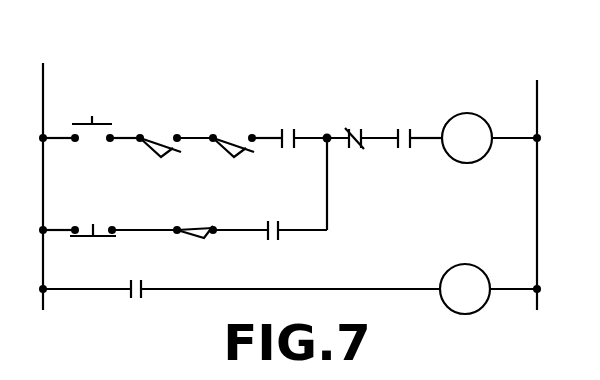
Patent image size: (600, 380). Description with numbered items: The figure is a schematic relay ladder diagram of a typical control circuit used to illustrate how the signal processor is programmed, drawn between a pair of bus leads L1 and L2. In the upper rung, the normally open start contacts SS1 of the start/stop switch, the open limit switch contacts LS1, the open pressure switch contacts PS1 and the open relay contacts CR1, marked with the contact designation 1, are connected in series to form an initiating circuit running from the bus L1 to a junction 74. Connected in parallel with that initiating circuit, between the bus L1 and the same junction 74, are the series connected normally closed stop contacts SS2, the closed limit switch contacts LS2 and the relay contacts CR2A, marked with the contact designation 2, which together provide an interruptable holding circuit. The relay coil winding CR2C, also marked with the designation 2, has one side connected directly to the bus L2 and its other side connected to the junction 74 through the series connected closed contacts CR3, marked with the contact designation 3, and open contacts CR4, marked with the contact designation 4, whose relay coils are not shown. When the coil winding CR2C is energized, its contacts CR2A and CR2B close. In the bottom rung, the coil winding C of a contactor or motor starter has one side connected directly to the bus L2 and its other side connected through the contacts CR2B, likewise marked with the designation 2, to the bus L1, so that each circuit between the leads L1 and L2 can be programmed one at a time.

The junction 74 is at (328, 142).
The relay contact CR1 1 is at (288, 121).
The relay CR2 coil and contacts 2 is at (306, 196).
The relay contact CR3 3 is at (355, 121).
The relay contact CR4 4 is at (405, 121).
The bus lead L1 is at (43, 178).
The bus lead L2 is at (537, 184).
The normally open contacts of start/stop switch SS1 is at (92, 100).
The normally closed contacts of start/stop switch SS2 is at (93, 210).
The open limit switch contacts LS1 is at (160, 125).
The closed limit switch contacts LS2 is at (195, 211).
The open pressure switch contacts PS1 is at (233, 125).
The open relay contacts CR1 is at (288, 121).
The closed relay contacts CR3 is at (355, 121).
The open relay contacts CR4 is at (405, 121).
The relay contacts CR2A is at (275, 212).
The relay contacts CR2B is at (140, 271).
The relay coil winding CR2C is at (467, 128).
The coil winding of contactor or motor starter C is at (465, 281).